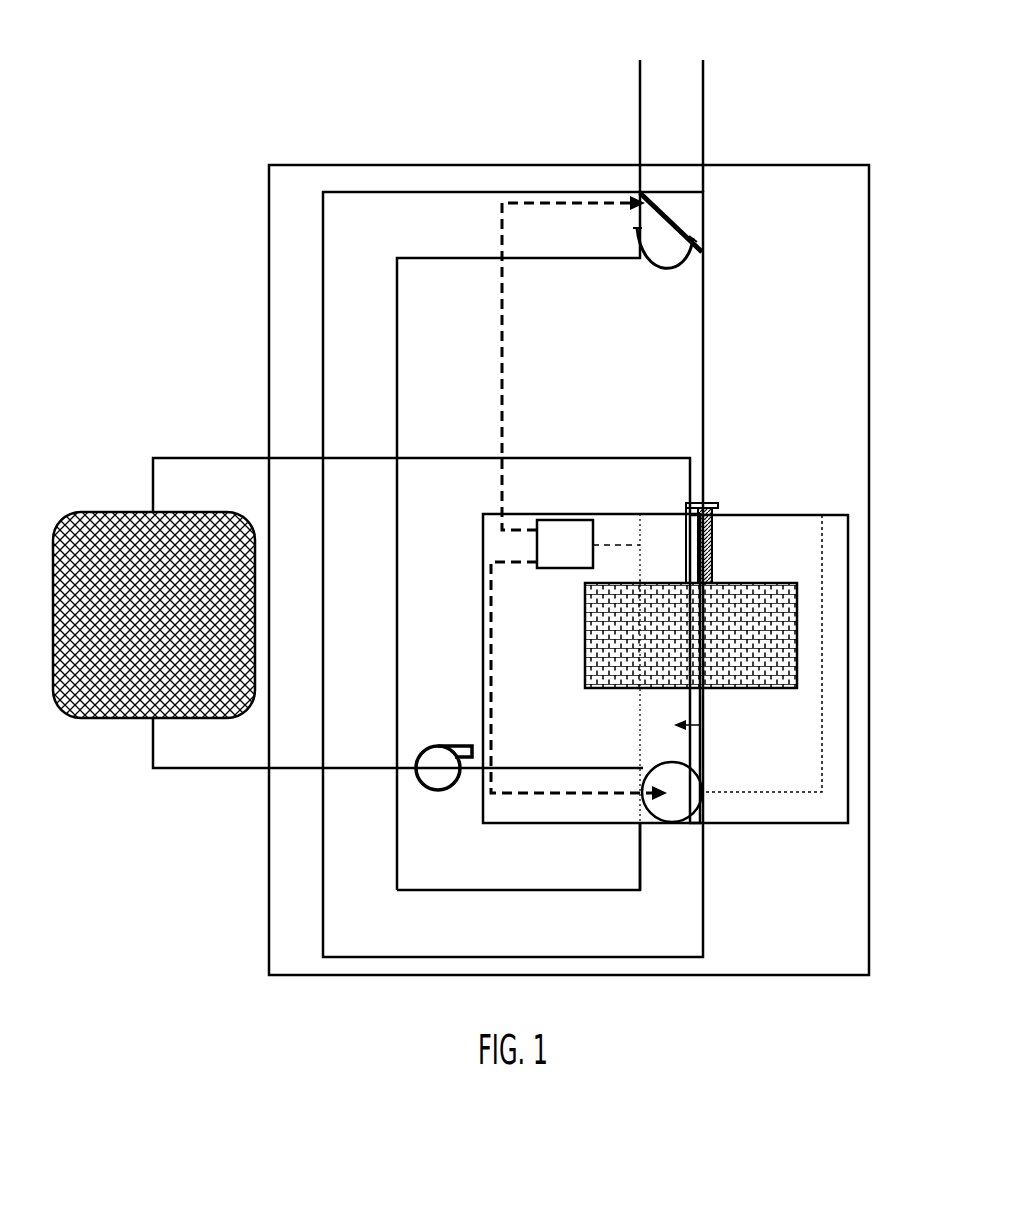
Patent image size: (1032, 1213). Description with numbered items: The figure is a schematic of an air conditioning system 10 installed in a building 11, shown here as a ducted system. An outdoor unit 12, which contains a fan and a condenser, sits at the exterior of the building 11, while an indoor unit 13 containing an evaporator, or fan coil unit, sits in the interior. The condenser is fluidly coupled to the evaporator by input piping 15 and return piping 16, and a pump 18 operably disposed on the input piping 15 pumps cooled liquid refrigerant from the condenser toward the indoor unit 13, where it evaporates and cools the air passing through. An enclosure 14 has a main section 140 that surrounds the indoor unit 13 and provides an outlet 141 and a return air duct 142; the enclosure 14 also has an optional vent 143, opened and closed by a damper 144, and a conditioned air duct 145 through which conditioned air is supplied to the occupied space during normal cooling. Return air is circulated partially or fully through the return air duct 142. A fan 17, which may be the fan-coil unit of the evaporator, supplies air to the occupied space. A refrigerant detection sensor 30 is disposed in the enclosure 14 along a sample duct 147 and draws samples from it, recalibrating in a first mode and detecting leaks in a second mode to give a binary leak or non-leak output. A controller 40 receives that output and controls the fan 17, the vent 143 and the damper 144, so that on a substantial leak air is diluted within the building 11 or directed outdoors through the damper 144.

The air conditioning system 10 is at (155, 205).
The building 11 is at (866, 165).
The outdoor unit 12 is at (97, 722).
The indoor unit 13 is at (580, 678).
The enclosure 14 is at (793, 515).
The input piping 15 is at (160, 790).
The return piping 16 is at (150, 472).
The fan 17 is at (672, 800).
The pump 18 is at (435, 746).
The refrigerant detection sensor 30 is at (735, 537).
The controller 40 is at (540, 537).
The main section 140 is at (537, 615).
The outlet 141 is at (658, 492).
The return air duct 142 is at (663, 845).
The vent 143 is at (685, 98).
The damper 144 is at (668, 215).
The conditioned air duct 145 is at (685, 342).
The sample duct 147 is at (700, 725).